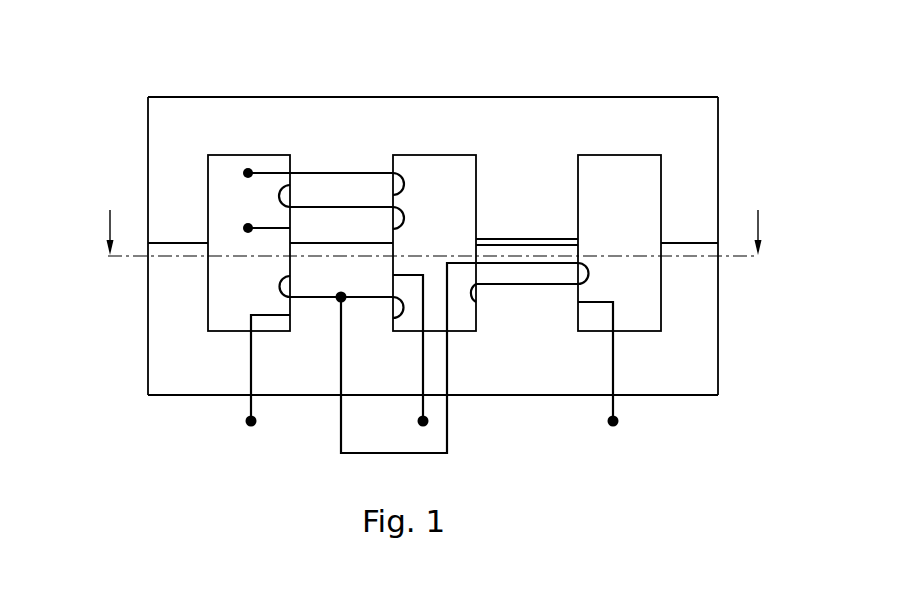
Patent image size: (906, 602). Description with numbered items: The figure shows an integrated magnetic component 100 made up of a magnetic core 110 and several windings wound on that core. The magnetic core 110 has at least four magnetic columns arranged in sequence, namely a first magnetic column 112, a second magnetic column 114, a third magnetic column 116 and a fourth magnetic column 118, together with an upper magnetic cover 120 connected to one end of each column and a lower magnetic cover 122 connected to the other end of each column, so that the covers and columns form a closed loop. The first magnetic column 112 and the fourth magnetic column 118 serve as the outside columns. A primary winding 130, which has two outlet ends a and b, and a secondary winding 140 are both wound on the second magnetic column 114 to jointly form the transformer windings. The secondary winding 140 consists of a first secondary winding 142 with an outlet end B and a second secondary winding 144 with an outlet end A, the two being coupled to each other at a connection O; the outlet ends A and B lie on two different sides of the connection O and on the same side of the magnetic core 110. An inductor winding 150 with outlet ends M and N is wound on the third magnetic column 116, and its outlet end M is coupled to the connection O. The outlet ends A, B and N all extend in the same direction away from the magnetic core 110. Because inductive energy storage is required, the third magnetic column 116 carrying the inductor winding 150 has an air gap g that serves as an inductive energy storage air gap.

The integrated magnetic component 100 is at (88, 47).
The magnetic core 110 is at (730, 346).
The first magnetic column 112 is at (180, 185).
The second magnetic column 114 is at (337, 187).
The third magnetic column 116 is at (522, 185).
The fourth magnetic column 118 is at (674, 183).
The upper magnetic cover 120 is at (443, 112).
The lower magnetic cover 122 is at (532, 370).
The primary winding 130 is at (370, 187).
The secondary winding 140 is at (215, 368).
The first secondary winding 142 is at (280, 284).
The second secondary winding 144 is at (250, 356).
The inductor winding 150 is at (595, 268).
The air gap g is at (594, 243).